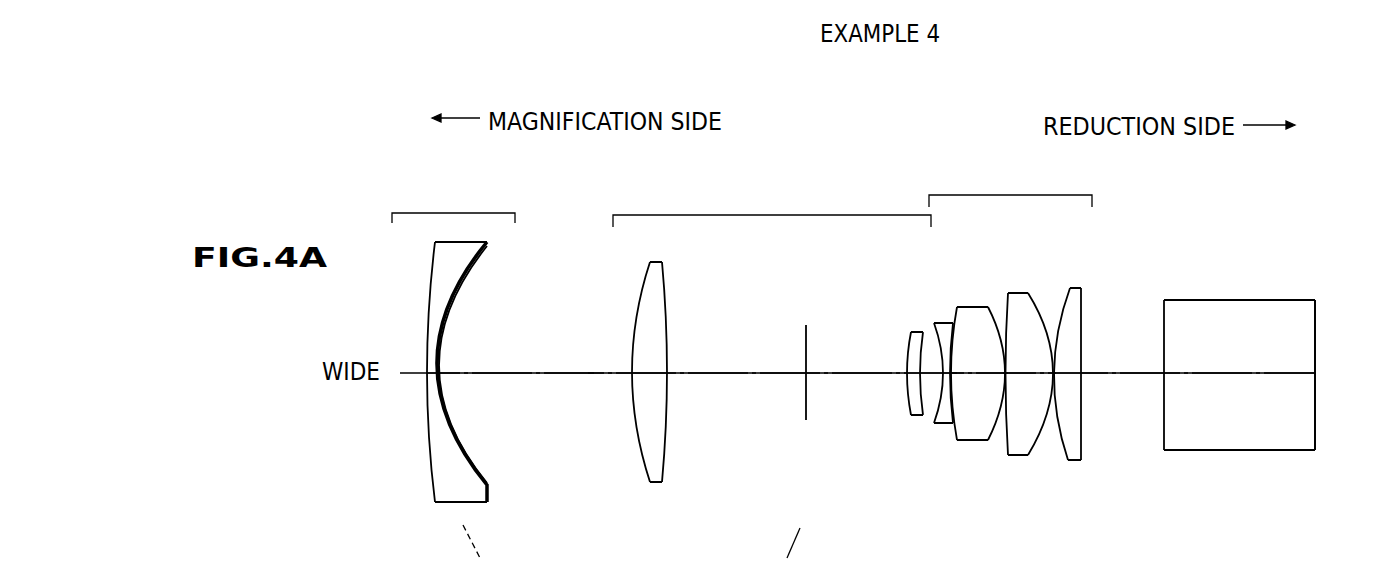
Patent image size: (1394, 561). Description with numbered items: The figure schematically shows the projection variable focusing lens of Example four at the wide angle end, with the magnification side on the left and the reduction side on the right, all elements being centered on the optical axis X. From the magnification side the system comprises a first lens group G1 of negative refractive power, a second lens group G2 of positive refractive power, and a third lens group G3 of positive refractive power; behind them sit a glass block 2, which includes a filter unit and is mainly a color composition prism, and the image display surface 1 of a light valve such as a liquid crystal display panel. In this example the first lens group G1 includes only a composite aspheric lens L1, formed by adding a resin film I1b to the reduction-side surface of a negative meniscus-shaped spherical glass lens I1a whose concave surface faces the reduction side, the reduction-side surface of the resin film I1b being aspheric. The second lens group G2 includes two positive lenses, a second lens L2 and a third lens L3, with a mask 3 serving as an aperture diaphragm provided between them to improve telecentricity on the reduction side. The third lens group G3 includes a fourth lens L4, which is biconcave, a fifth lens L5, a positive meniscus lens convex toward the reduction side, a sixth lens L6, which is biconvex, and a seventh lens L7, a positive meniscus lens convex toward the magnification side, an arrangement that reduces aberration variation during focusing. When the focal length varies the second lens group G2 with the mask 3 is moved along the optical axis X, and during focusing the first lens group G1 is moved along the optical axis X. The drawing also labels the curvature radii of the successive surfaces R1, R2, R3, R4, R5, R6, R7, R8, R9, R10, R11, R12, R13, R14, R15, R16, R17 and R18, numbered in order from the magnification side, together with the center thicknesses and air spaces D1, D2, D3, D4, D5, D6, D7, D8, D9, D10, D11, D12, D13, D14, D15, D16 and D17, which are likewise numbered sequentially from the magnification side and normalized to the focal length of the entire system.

The first lens group G1 is at (453, 199).
The second lens group G2 is at (772, 202).
The third lens group G3 is at (1010, 184).
The composite aspheric lens L1 is at (400, 516).
The spherical glass lens I1a is at (435, 473).
The resin film I1b is at (470, 458).
The second lens L2 is at (652, 483).
The third lens L3 is at (912, 418).
The fourth lens L4 is at (940, 428).
The fifth lens L5 is at (955, 441).
The sixth lens L6 is at (1028, 458).
The seventh lens L7 is at (1082, 460).
The mask 3 is at (805, 413).
The glass block 2 is at (1245, 450).
The image display surface 1 is at (1316, 418).
The optical axis X is at (592, 376).
The curvature radius R1 is at (427, 360).
The curvature radius R2 is at (447, 317).
The curvature radius R3 is at (438, 356).
The curvature radius R4 is at (632, 365).
The curvature radius R5 is at (693, 353).
The curvature radius R6 is at (805, 337).
The curvature radius R7 is at (905, 367).
The curvature radius R8 is at (917, 345).
The curvature radius R9 is at (935, 350).
The curvature radius R10 is at (951, 345).
The curvature radius R11 is at (958, 330).
The curvature radius R12 is at (1000, 330).
The curvature radius R13 is at (1011, 310).
The curvature radius R14 is at (1047, 312).
The curvature radius R15 is at (1072, 295).
The curvature radius R16 is at (1082, 363).
The curvature radius R17 is at (1163, 323).
The curvature radius R18 is at (1335, 342).
The center thickness or air space D1 is at (427, 402).
The center thickness or air space D2 is at (450, 380).
The center thickness or air space D3 is at (559, 388).
The center thickness or air space D4 is at (653, 380).
The center thickness or air space D5 is at (736, 388).
The center thickness or air space D6 is at (856, 392).
The center thickness or air space D7 is at (910, 381).
The center thickness or air space D8 is at (905, 385).
The center thickness or air space D9 is at (930, 385).
The center thickness or air space D10 is at (965, 385).
The center thickness or air space D11 is at (1000, 385).
The center thickness or air space D12 is at (1040, 385).
The center thickness or air space D13 is at (1065, 390).
The center thickness or air space D14 is at (1065, 383).
The center thickness or air space D15 is at (1085, 380).
The center thickness or air space D16 is at (1150, 385).
The center thickness or air space D17 is at (1239, 392).